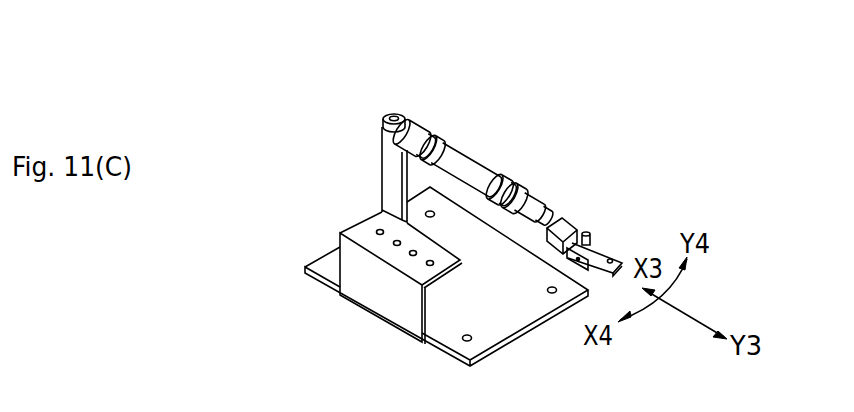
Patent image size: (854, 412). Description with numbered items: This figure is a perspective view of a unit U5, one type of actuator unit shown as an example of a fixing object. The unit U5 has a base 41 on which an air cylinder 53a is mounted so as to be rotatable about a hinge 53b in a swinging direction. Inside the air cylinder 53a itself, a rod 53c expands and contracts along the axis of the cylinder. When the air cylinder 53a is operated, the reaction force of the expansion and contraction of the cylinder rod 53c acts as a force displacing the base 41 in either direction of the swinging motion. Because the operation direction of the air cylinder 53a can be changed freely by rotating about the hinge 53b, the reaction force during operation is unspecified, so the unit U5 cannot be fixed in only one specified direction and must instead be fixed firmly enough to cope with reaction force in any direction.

The unit U5 is at (328, 100).
The base 41 is at (327, 262).
The air cylinder 53a is at (481, 172).
The hinge 53b is at (393, 112).
The rod 53c is at (555, 216).